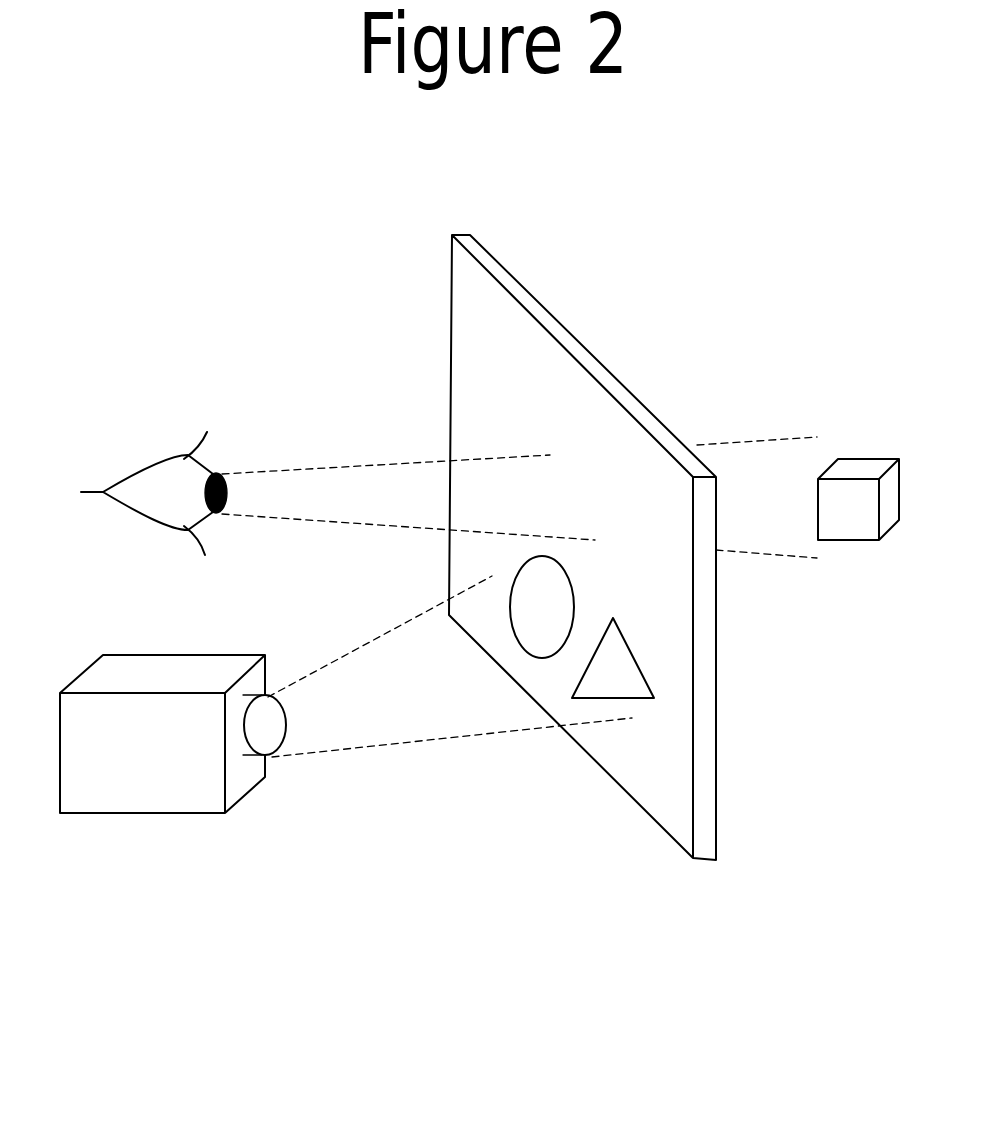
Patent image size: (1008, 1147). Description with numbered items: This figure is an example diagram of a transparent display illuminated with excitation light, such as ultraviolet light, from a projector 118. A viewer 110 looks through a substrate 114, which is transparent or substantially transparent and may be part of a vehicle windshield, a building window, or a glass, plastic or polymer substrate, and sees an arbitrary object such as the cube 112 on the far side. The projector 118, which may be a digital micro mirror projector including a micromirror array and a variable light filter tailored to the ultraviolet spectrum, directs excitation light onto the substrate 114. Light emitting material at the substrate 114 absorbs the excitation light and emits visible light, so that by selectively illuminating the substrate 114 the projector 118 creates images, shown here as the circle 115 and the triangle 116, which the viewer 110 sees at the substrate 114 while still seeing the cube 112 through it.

The viewer 110 is at (205, 453).
The cube 112 is at (860, 458).
The substrate 114 is at (533, 297).
The circle 115 is at (530, 618).
The triangle 116 is at (613, 677).
The projector 118 is at (183, 773).